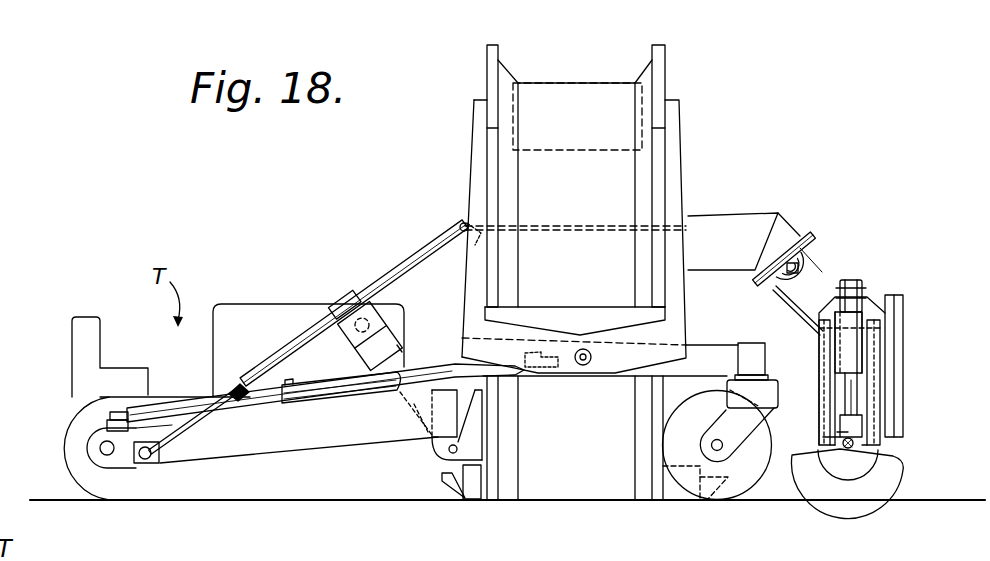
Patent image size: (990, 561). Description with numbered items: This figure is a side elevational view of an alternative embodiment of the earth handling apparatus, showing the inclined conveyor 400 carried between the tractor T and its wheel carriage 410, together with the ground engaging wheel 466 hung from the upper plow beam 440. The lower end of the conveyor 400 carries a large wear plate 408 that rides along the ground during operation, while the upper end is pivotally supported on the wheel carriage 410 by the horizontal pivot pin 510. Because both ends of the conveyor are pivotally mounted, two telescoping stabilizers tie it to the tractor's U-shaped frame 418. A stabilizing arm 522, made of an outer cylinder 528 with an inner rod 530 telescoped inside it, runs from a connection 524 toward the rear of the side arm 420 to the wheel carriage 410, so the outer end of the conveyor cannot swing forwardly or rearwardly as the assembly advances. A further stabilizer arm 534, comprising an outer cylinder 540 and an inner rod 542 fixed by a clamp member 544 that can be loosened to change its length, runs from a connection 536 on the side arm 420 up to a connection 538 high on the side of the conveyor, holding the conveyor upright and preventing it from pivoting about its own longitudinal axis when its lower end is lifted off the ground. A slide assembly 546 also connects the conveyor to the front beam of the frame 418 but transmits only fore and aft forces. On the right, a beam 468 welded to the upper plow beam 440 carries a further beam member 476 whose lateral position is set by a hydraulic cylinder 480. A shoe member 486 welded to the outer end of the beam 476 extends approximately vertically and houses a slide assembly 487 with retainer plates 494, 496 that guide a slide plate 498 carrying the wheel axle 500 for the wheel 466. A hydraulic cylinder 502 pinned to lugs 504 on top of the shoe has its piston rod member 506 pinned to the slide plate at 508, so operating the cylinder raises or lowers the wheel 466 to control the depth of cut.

The conveyor 400 is at (577, 81).
The wear plate 408 is at (446, 488).
The wheel carriage 410 is at (702, 345).
The U-shaped frame 418 is at (382, 441).
The side arm 420 is at (284, 448).
The upper plow beam 440 is at (731, 221).
The ground engaging wheel 466 is at (883, 477).
The beam 468 is at (797, 230).
The beam member 476 is at (820, 286).
The hydraulic cylinder 480 is at (813, 272).
The shoe member 486 is at (906, 376).
The slide assembly 487 is at (886, 343).
The retainer plate 494 is at (817, 350).
The retainer plate 496 is at (878, 330).
The slide plate 498 is at (868, 428).
The wheel axle 500 is at (853, 447).
The hydraulic cylinder 502 is at (866, 304).
The lugs 504 is at (864, 285).
The piston rod member 506 is at (852, 398).
The pin connection 508 is at (837, 430).
The pivot pin 510 is at (585, 365).
The stabilizing arm 522 is at (343, 404).
The connection 524 is at (110, 413).
The outer cylinder 528 is at (328, 383).
The inner rod 530 is at (173, 402).
The stabilizer arm 534 is at (405, 266).
The connection 536 is at (153, 462).
The connection 538 is at (461, 223).
The outer cylinder 540 is at (315, 333).
The inner rod 542 is at (190, 428).
The clamp member 544 is at (240, 385).
The slide assembly 546 is at (433, 449).